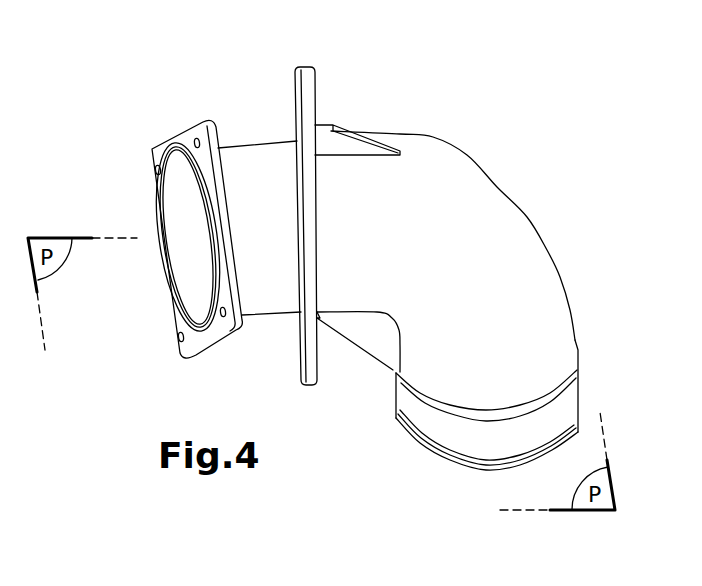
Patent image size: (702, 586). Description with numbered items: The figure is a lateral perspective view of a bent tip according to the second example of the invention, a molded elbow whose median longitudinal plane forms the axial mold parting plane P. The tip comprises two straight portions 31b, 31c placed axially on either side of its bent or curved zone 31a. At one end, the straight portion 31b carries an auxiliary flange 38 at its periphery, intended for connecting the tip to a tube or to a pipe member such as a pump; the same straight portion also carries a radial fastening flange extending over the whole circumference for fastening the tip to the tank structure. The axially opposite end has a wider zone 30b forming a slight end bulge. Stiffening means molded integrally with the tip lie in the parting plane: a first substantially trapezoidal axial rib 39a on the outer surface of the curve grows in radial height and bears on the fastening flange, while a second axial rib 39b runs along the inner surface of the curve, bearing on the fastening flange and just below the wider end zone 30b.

The wider end zone 30b is at (583, 393).
The bent or curved zone 31a is at (523, 229).
The straight portion 31b is at (262, 146).
The straight portion 31c is at (574, 323).
The auxiliary flange 38 is at (160, 328).
The first axial rib 39a is at (343, 143).
The second axial rib 39b is at (347, 348).